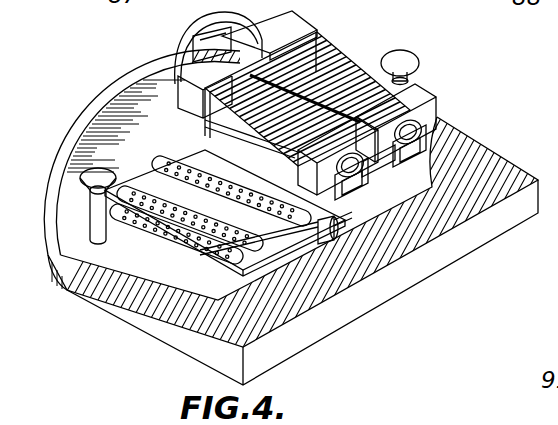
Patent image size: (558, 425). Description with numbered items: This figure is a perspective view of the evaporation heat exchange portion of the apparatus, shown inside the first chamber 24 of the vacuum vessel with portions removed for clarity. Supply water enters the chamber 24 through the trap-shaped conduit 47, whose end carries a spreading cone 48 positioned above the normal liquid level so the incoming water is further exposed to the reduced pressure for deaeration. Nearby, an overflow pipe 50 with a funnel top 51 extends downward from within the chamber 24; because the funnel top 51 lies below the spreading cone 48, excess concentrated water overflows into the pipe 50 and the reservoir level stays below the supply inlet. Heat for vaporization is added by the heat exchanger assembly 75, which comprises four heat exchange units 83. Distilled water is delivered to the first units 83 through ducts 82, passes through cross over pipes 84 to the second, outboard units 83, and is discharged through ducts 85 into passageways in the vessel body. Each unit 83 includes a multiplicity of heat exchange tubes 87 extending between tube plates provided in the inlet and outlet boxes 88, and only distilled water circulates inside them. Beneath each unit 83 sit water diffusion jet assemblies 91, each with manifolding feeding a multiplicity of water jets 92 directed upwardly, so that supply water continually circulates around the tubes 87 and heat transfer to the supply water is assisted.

The first chamber 24 is at (86, 101).
The conduit 47 is at (445, 70).
The spreading cone 48 is at (416, 57).
The overflow pipe 50 is at (97, 232).
The funnel top 51 is at (95, 179).
The heat exchanger assembly 75 is at (346, 52).
The ducts 82 is at (338, 200).
The heat exchange units 83 is at (293, 26).
The cross over pipes 84 is at (189, 46).
The ducts 85 is at (434, 106).
The heat exchange tubes 87 is at (210, 139).
The inlet and outlet boxes 88 is at (362, 146).
The water diffusion jet assemblies 91 is at (158, 242).
The water jets 92 is at (167, 153).